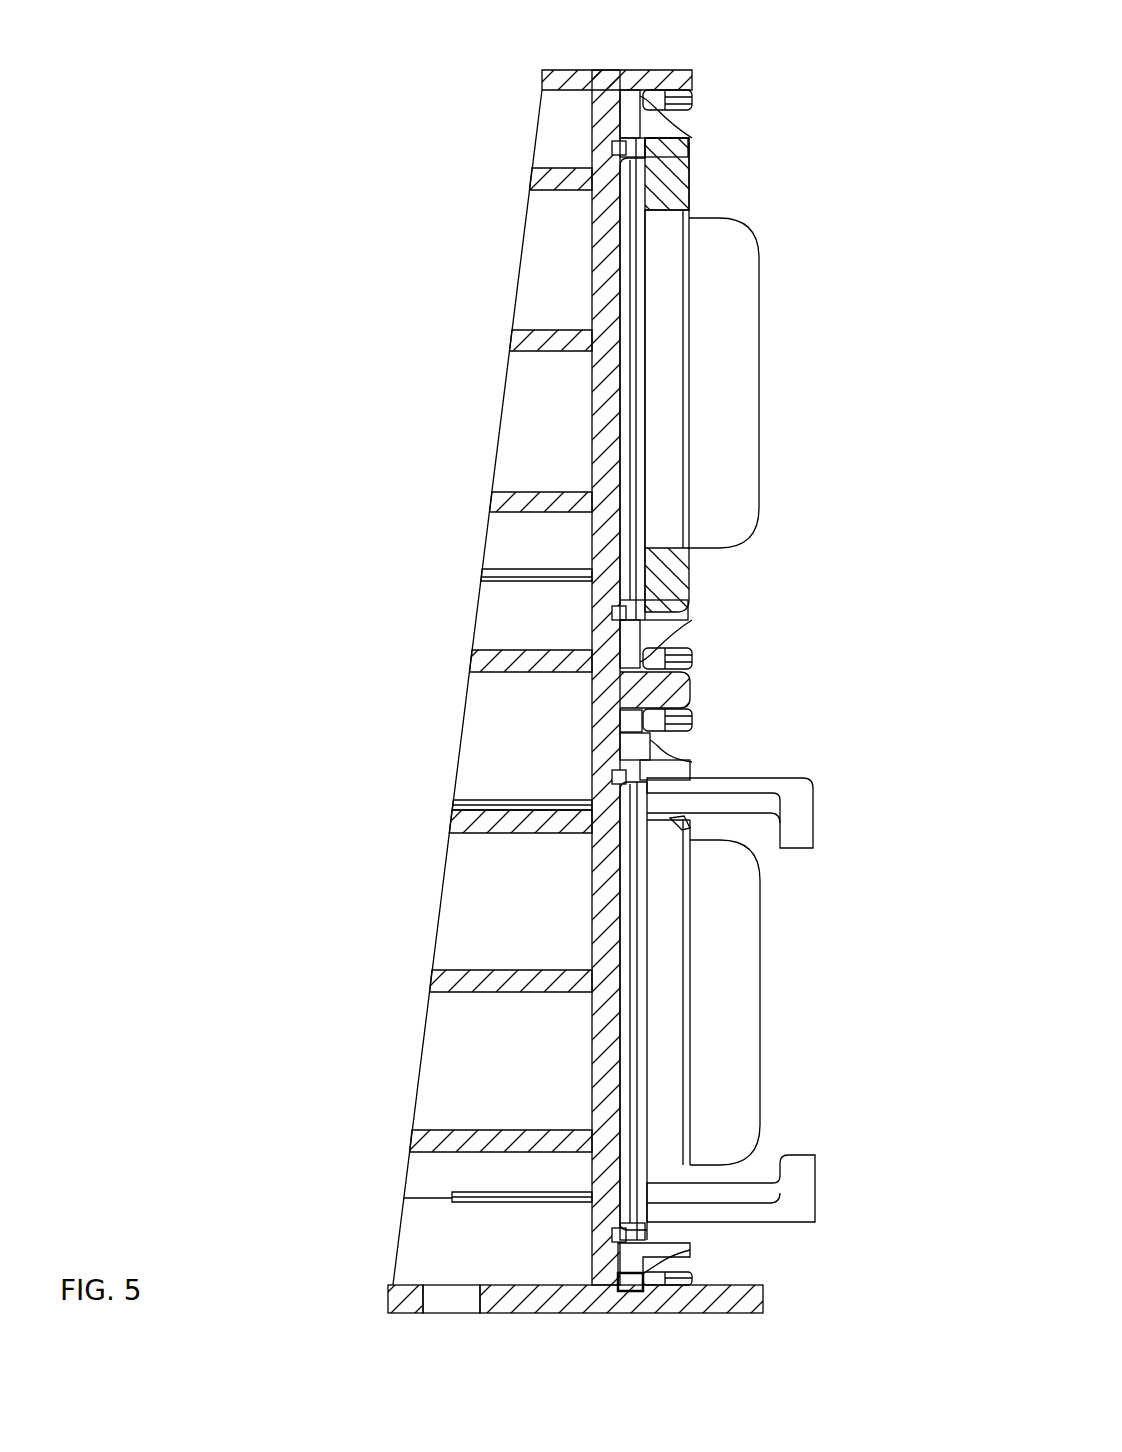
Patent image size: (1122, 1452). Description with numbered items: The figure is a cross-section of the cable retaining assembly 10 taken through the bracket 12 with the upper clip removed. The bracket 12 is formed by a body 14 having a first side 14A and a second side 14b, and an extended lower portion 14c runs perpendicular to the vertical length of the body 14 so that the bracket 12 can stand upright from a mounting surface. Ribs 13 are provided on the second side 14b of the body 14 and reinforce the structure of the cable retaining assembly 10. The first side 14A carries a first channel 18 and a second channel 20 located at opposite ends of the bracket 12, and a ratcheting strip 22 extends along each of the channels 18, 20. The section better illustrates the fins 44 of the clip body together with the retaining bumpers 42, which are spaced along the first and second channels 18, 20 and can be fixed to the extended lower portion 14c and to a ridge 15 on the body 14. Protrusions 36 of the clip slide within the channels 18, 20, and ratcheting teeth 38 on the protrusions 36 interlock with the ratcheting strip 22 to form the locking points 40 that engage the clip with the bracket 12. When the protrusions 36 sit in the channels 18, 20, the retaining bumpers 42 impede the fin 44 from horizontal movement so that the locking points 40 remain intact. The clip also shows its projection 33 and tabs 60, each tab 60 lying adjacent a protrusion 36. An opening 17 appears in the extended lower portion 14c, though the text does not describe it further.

The cable retaining assembly 10 is at (252, 506).
The bracket 12 is at (504, 110).
The ribs 13 is at (532, 337).
The body 14 is at (616, 52).
The first side 14A is at (622, 389).
The second side 14b is at (594, 266).
The extended lower portion 14c is at (604, 1321).
The ridge 15 is at (664, 693).
The opening 17 is at (455, 1300).
The first channel 18 is at (720, 112).
The second channel 20 is at (734, 651).
The ratcheting strip 22 is at (620, 148).
The projection 33 is at (736, 316).
The protrusions 36 is at (632, 721).
The ratcheting teeth 38 is at (646, 150).
The locking points 40 is at (592, 151).
The retaining bumpers 42 is at (650, 98).
The fins 44 is at (632, 130).
The tabs 60 is at (808, 828).